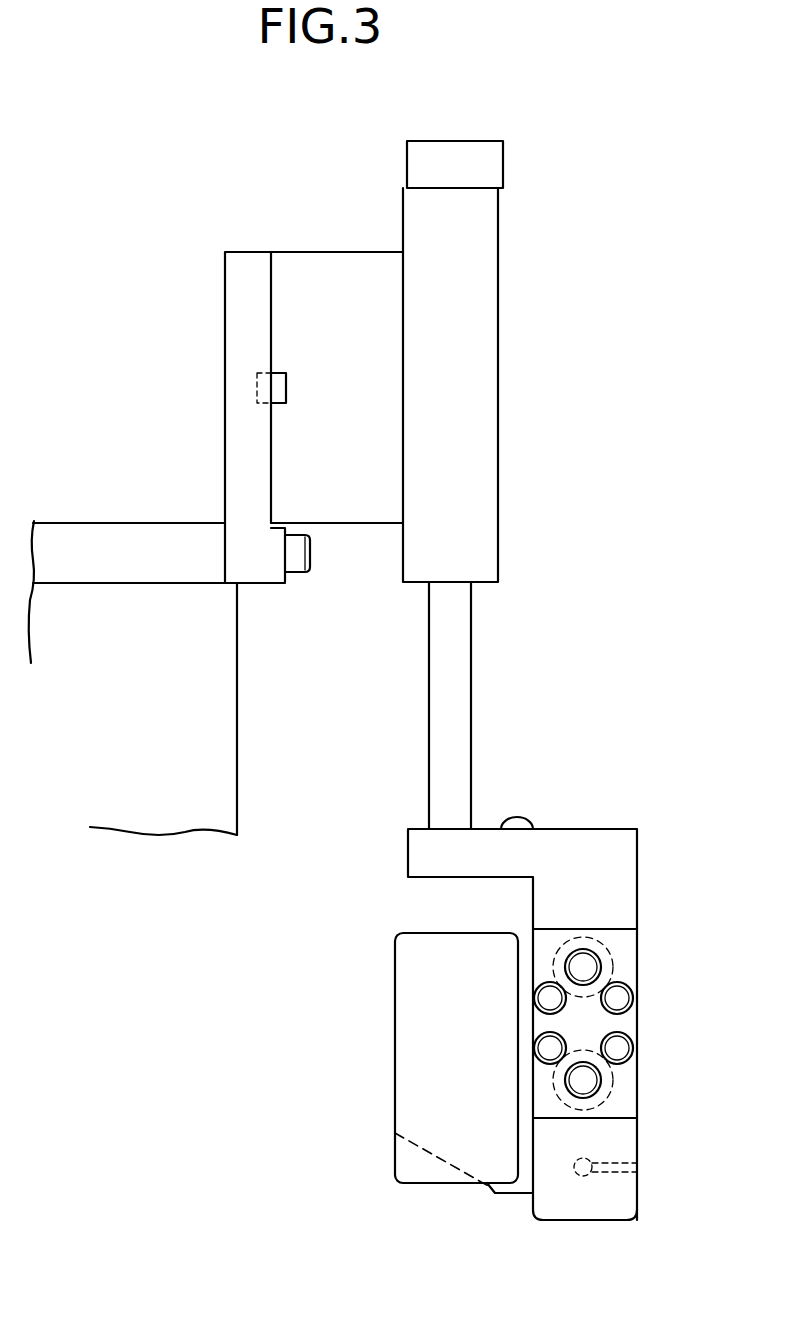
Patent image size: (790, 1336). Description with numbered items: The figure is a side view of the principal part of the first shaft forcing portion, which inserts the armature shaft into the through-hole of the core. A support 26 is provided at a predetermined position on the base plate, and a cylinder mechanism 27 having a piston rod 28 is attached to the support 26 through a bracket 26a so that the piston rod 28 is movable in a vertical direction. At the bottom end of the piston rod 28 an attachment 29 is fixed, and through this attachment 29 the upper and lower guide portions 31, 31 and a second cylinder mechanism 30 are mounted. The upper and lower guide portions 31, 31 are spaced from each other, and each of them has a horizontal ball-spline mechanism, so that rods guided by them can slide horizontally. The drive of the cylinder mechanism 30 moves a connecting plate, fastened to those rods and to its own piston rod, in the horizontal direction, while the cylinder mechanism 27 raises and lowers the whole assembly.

The support 26 is at (222, 671).
The bracket 26a is at (241, 430).
The cylinder mechanism 27 is at (485, 356).
The piston rod 28 is at (462, 663).
The attachment 29 is at (620, 865).
The cylinder mechanism 30 is at (588, 1160).
The guide portions 31 is at (613, 957).